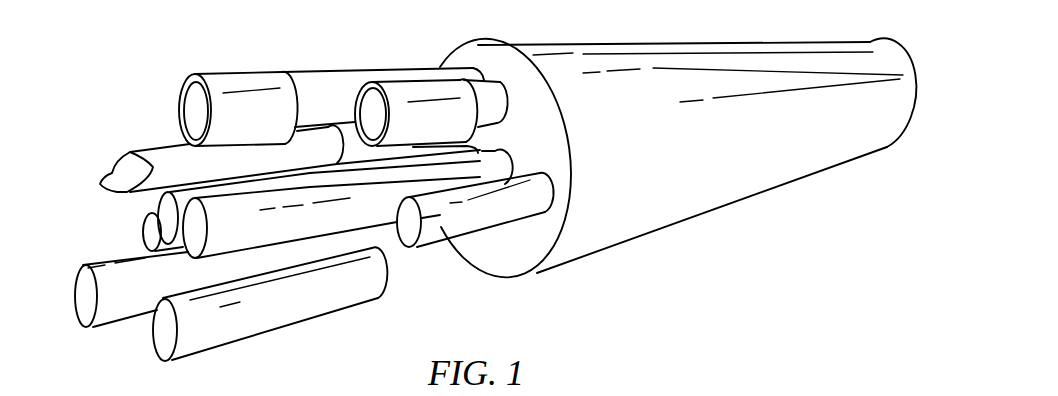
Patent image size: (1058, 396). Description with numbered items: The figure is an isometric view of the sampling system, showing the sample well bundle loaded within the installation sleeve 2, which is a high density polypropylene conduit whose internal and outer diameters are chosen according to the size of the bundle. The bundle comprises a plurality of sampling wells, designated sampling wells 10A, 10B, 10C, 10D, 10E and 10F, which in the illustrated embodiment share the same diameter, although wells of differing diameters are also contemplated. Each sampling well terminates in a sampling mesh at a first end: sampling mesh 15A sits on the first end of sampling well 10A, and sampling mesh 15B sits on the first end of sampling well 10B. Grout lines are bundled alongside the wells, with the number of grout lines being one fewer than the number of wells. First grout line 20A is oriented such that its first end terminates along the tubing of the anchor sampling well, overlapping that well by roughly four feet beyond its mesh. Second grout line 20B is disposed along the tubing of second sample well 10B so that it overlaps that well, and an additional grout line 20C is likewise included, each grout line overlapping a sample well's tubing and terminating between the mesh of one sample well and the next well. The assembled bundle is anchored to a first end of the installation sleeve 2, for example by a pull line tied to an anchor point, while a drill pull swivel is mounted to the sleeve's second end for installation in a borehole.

The installation sleeve 2 is at (727, 183).
The sampling well 10A is at (497, 98).
The sampling well 10B is at (327, 72).
The sampling well 10C is at (150, 233).
The sampling well 10D is at (117, 308).
The sampling well 10E is at (350, 213).
The sampling well 10F is at (472, 222).
The sampling mesh 15A is at (412, 77).
The sampling mesh 15B is at (223, 70).
The first grout line 20A is at (118, 165).
The second grout line 20B is at (158, 206).
The grout line 20C is at (273, 315).